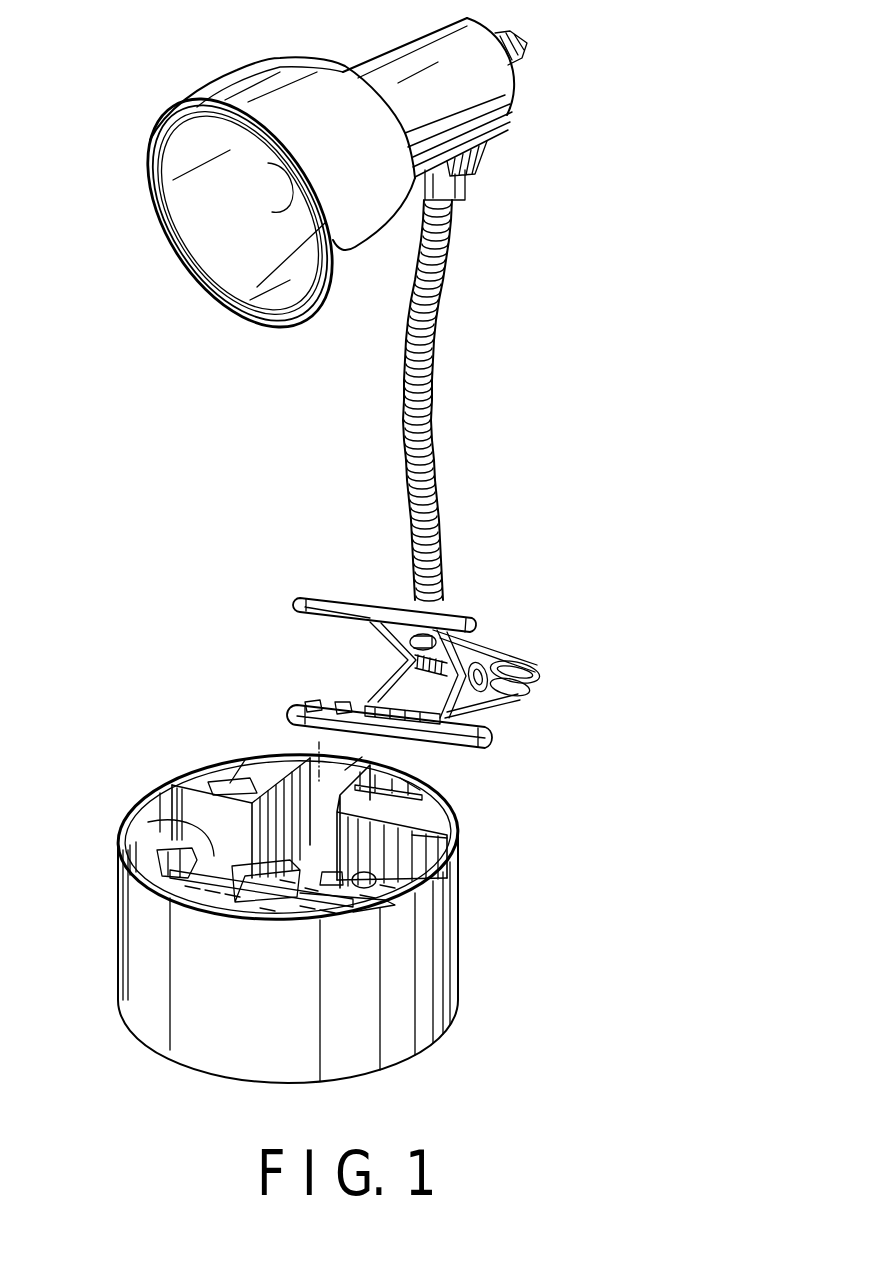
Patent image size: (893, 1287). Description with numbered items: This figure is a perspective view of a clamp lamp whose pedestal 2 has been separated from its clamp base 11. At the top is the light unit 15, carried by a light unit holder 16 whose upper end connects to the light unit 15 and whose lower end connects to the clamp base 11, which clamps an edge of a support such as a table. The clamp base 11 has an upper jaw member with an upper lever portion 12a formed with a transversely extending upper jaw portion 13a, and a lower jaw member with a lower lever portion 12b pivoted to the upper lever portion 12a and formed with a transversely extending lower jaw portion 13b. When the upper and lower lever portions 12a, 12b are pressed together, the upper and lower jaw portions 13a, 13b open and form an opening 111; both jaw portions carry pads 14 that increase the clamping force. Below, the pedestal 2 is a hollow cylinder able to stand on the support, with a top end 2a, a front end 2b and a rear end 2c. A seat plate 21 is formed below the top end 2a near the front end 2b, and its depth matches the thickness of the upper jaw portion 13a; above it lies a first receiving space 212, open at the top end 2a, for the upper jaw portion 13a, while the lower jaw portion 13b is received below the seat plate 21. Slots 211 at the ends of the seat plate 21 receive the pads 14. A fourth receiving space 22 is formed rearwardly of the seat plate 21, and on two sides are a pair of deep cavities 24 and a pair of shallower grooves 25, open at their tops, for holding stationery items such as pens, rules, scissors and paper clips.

The clamp base 11 is at (482, 660).
The opening 111 is at (362, 662).
The upper lever portion 12a is at (513, 637).
The lower lever portion 12b is at (513, 707).
The upper jaw portion 13a is at (320, 597).
The lower jaw portion 13b is at (453, 747).
The pads 14 is at (335, 700).
The light unit 15 is at (513, 113).
The light unit holder 16 is at (437, 293).
The pedestal 2 is at (472, 935).
The top end 2a is at (122, 825).
The front end 2b is at (390, 1007).
The rear end 2c is at (317, 758).
The seat plate 21 is at (217, 910).
The slots 211 is at (158, 897).
The first receiving space 212 is at (420, 922).
The fourth receiving space 22 is at (440, 877).
The deep cavities 24 is at (160, 815).
The shallower grooves 25 is at (237, 787).